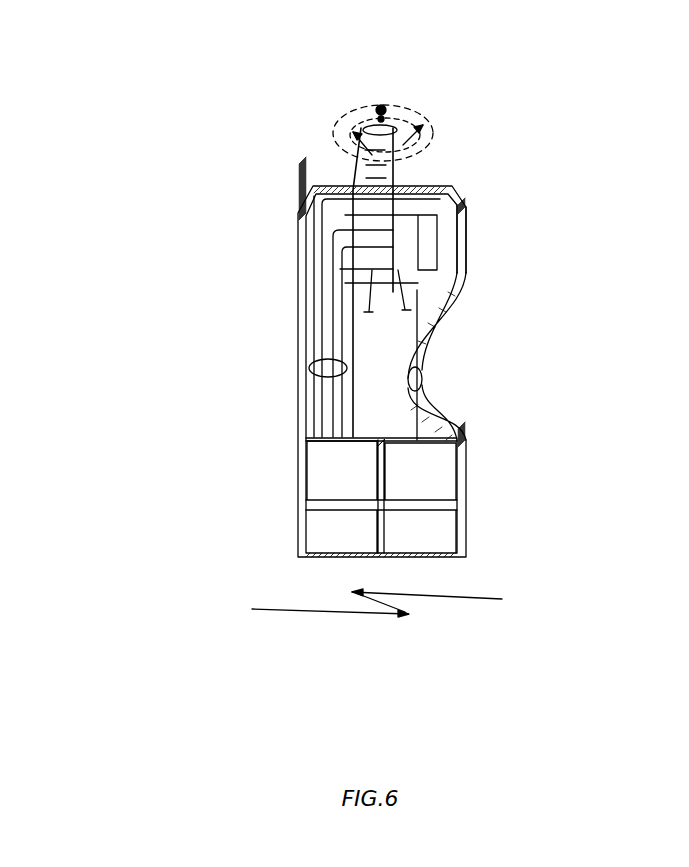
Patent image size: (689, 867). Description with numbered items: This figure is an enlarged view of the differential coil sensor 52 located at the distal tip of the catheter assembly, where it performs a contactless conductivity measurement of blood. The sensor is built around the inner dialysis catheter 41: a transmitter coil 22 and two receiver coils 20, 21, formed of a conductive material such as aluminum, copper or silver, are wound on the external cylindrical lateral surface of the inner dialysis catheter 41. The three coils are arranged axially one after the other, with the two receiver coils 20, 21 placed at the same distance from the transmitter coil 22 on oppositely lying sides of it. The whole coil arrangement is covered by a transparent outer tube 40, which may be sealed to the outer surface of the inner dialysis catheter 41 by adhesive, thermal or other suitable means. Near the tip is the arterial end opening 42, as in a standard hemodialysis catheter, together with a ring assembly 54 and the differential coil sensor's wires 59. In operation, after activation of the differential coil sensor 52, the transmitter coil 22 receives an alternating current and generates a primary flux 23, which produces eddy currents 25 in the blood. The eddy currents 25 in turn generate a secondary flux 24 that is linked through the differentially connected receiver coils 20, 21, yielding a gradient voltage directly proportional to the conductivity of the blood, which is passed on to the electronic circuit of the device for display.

The receiver coil 20 is at (352, 200).
The receiver coil 21 is at (356, 270).
The transmitter coil 22 is at (357, 243).
The primary flux 23 is at (408, 307).
The secondary flux 24 is at (405, 160).
The eddy currents 25 is at (415, 110).
The transparent outer tube 40 is at (465, 218).
The inner dialysis catheter 41 is at (422, 338).
The end opening 42 is at (423, 377).
The differential coil sensor 52 is at (176, 248).
The ring assembly 54 is at (432, 483).
The differential coil sensor's wires 59 is at (308, 368).